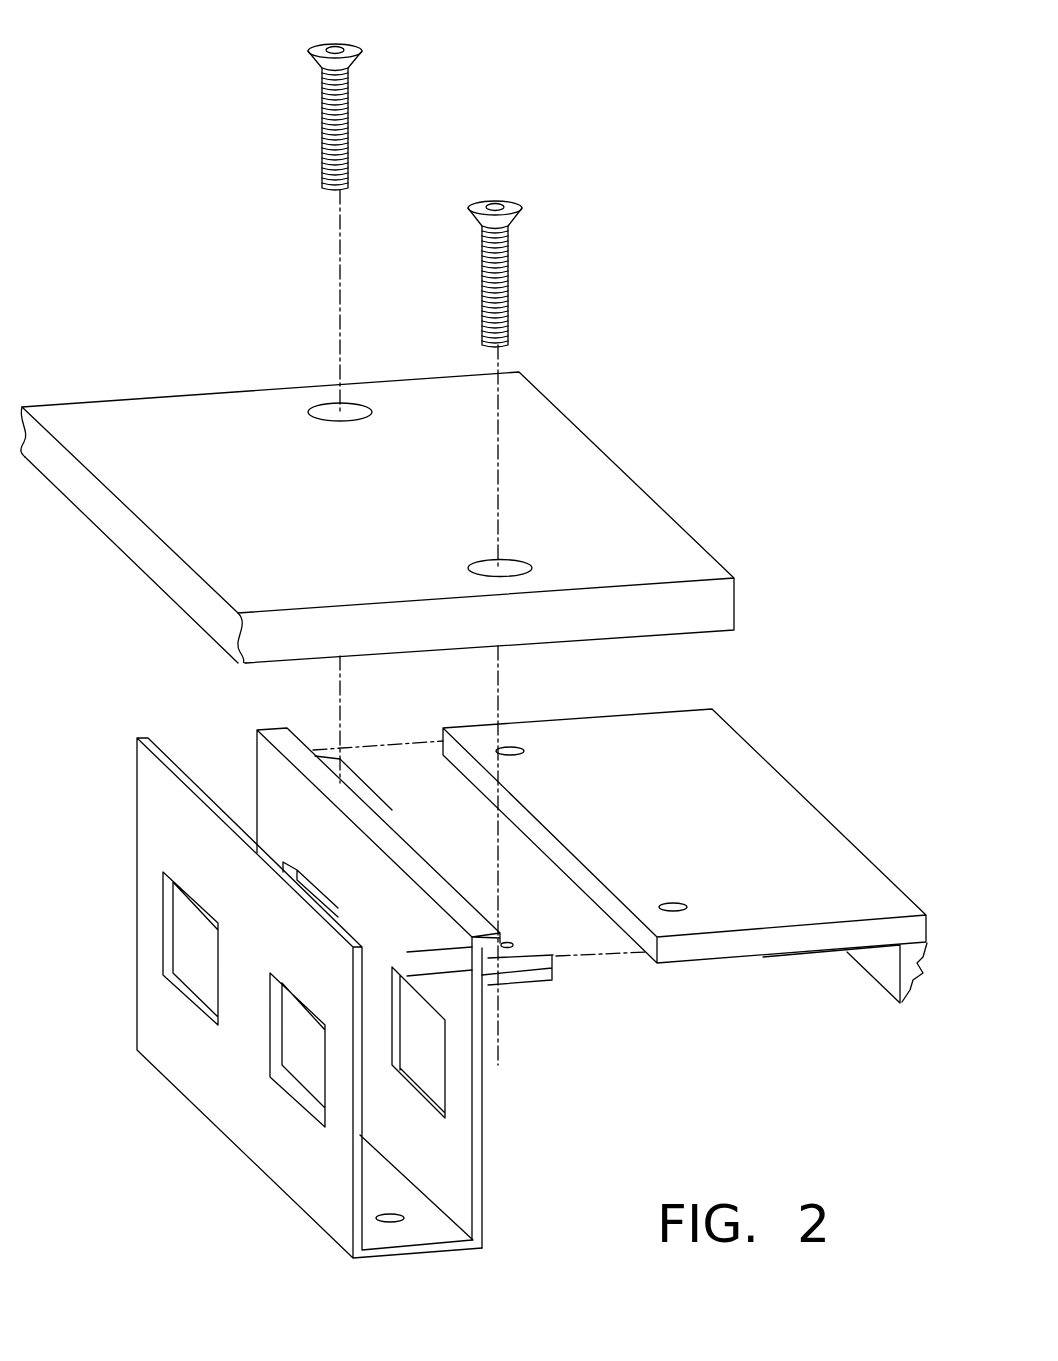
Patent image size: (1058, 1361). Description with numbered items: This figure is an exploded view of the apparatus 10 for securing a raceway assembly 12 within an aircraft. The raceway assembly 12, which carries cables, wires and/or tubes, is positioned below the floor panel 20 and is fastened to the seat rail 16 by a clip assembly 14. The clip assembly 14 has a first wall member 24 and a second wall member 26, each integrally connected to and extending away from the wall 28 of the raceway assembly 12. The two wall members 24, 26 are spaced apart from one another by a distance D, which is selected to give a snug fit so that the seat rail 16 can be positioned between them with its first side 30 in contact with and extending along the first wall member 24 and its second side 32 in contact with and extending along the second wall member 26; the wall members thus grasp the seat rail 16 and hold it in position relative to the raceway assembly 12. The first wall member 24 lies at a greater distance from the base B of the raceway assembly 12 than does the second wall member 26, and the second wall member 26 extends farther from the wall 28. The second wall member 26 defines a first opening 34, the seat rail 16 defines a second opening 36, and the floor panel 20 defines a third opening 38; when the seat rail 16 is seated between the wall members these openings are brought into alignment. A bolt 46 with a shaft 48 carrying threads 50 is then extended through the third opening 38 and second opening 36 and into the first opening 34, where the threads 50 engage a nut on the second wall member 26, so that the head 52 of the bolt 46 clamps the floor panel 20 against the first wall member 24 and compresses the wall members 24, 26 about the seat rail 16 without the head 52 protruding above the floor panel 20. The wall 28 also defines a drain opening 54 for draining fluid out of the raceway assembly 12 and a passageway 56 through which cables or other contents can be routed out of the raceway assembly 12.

The apparatus 10 is at (474, 660).
The raceway assembly 12 is at (310, 1010).
The clip assembly 14 is at (450, 923).
The seat rail 16 is at (620, 847).
The floor panel 20 is at (380, 481).
The first wall member 24 is at (386, 850).
The second wall member 26 is at (514, 939).
The wall 28 is at (477, 1122).
The first side 30 is at (722, 925).
The second side 32 is at (763, 959).
The first opening 34 is at (508, 943).
The second opening 36 is at (512, 749).
The third opening 38 is at (355, 405).
The bolt 46 is at (417, 532).
The shaft 48 is at (414, 207).
The threads 50 is at (323, 152).
The head 52 is at (348, 46).
The drain opening 54 is at (396, 1222).
The passageway 56 is at (165, 948).
The base B is at (398, 1266).
The distance D is at (428, 1010).